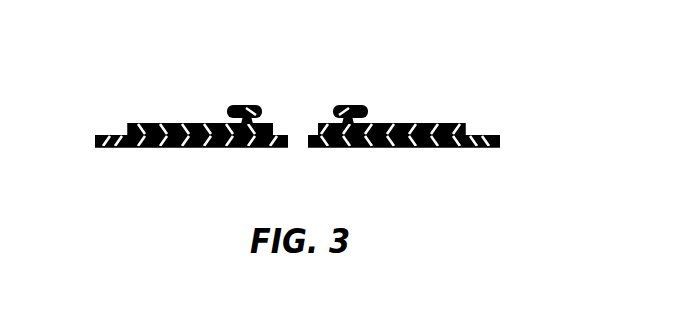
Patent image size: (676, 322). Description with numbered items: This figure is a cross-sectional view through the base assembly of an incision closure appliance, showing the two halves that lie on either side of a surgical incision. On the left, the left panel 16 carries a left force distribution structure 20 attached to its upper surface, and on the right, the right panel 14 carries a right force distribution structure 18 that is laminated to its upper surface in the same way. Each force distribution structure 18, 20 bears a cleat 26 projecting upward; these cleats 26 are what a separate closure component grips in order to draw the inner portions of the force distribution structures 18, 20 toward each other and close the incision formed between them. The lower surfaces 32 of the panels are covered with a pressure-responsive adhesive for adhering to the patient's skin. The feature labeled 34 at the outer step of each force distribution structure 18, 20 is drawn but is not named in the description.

The right panel 14 is at (483, 134).
The left panel 16 is at (113, 135).
The right force distribution structure 18 is at (405, 123).
The left force distribution structure 20 is at (192, 123).
The cleats 26 is at (240, 105).
The lower surfaces 32 is at (203, 148).
The edge / shoulder of layer 34 is at (152, 123).